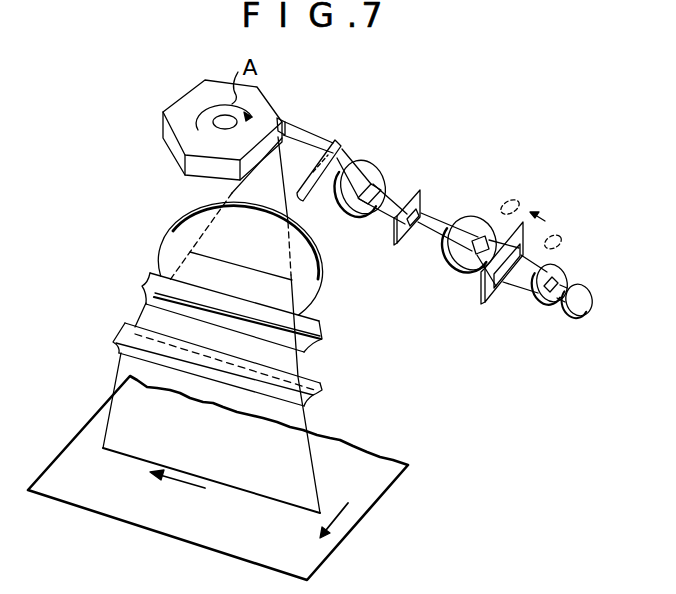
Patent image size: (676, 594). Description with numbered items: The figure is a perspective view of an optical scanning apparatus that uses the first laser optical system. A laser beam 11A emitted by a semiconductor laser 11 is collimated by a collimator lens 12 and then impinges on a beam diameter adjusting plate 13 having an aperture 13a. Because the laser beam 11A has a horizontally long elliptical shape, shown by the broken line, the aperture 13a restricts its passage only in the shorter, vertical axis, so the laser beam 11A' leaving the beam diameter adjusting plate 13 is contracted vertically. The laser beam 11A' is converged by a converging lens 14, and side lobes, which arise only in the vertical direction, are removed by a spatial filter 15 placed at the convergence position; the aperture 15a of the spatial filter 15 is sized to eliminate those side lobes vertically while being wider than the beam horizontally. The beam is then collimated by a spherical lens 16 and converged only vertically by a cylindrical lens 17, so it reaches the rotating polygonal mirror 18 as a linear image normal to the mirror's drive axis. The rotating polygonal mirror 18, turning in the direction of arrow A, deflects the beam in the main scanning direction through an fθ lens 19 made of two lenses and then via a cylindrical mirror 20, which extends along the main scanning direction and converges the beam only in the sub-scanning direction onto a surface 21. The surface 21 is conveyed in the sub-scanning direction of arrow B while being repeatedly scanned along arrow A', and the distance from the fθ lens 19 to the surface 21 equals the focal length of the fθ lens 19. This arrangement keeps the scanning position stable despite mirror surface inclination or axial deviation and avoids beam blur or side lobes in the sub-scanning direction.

The semiconductor laser 11 is at (591, 294).
The laser beam 11A is at (598, 275).
The laser beam 11A' is at (438, 296).
The collimator lens 12 is at (564, 257).
The beam diameter adjusting plate 13 is at (520, 254).
The aperture 13a is at (498, 290).
The converging lens 14 is at (478, 217).
The spatial filter 15 is at (404, 212).
The aperture 15a is at (412, 236).
The spherical lens 16 is at (371, 160).
The cylindrical lens 17 is at (338, 139).
The rotating polygonal mirror 18 is at (268, 111).
The fθ lens 19 is at (150, 216).
The cylindrical mirror 20 is at (117, 337).
The surface 21 is at (145, 513).